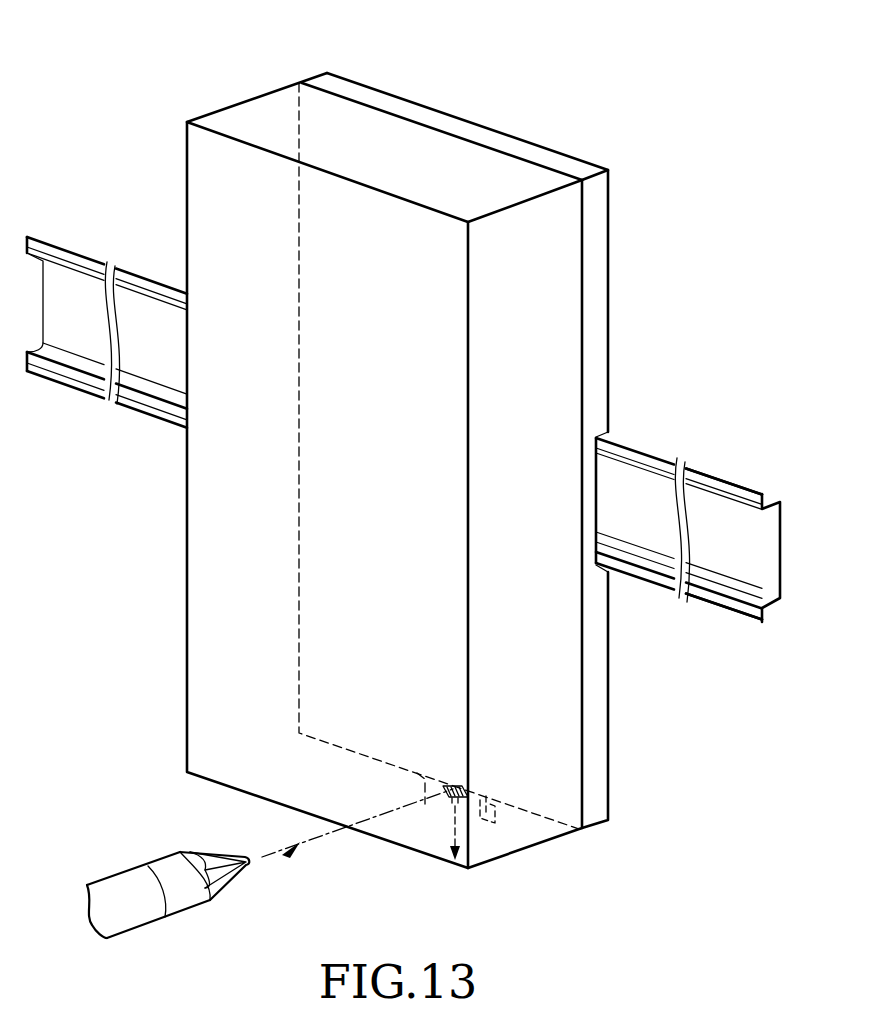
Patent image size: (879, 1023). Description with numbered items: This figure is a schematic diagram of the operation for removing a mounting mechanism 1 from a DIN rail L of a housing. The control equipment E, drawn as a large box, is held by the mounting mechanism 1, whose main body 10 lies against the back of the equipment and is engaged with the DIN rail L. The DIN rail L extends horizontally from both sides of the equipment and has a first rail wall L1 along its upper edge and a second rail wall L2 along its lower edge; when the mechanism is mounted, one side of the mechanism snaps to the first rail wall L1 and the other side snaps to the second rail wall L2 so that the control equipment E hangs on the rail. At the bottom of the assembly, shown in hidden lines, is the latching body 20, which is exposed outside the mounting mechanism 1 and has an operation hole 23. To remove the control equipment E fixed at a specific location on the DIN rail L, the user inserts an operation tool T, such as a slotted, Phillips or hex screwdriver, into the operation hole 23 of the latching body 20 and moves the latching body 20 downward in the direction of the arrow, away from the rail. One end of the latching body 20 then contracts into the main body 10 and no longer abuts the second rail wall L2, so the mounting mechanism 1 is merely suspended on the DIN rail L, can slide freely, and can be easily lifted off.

The control equipment E is at (256, 108).
The mounting mechanism 1 is at (444, 90).
The main body 10 is at (516, 148).
The latching body 20 is at (483, 816).
The operation hole 23 is at (449, 794).
The DIN rail L is at (655, 500).
The first rail wall L1 is at (722, 484).
The second rail wall L2 is at (710, 601).
The operation tool T is at (125, 886).